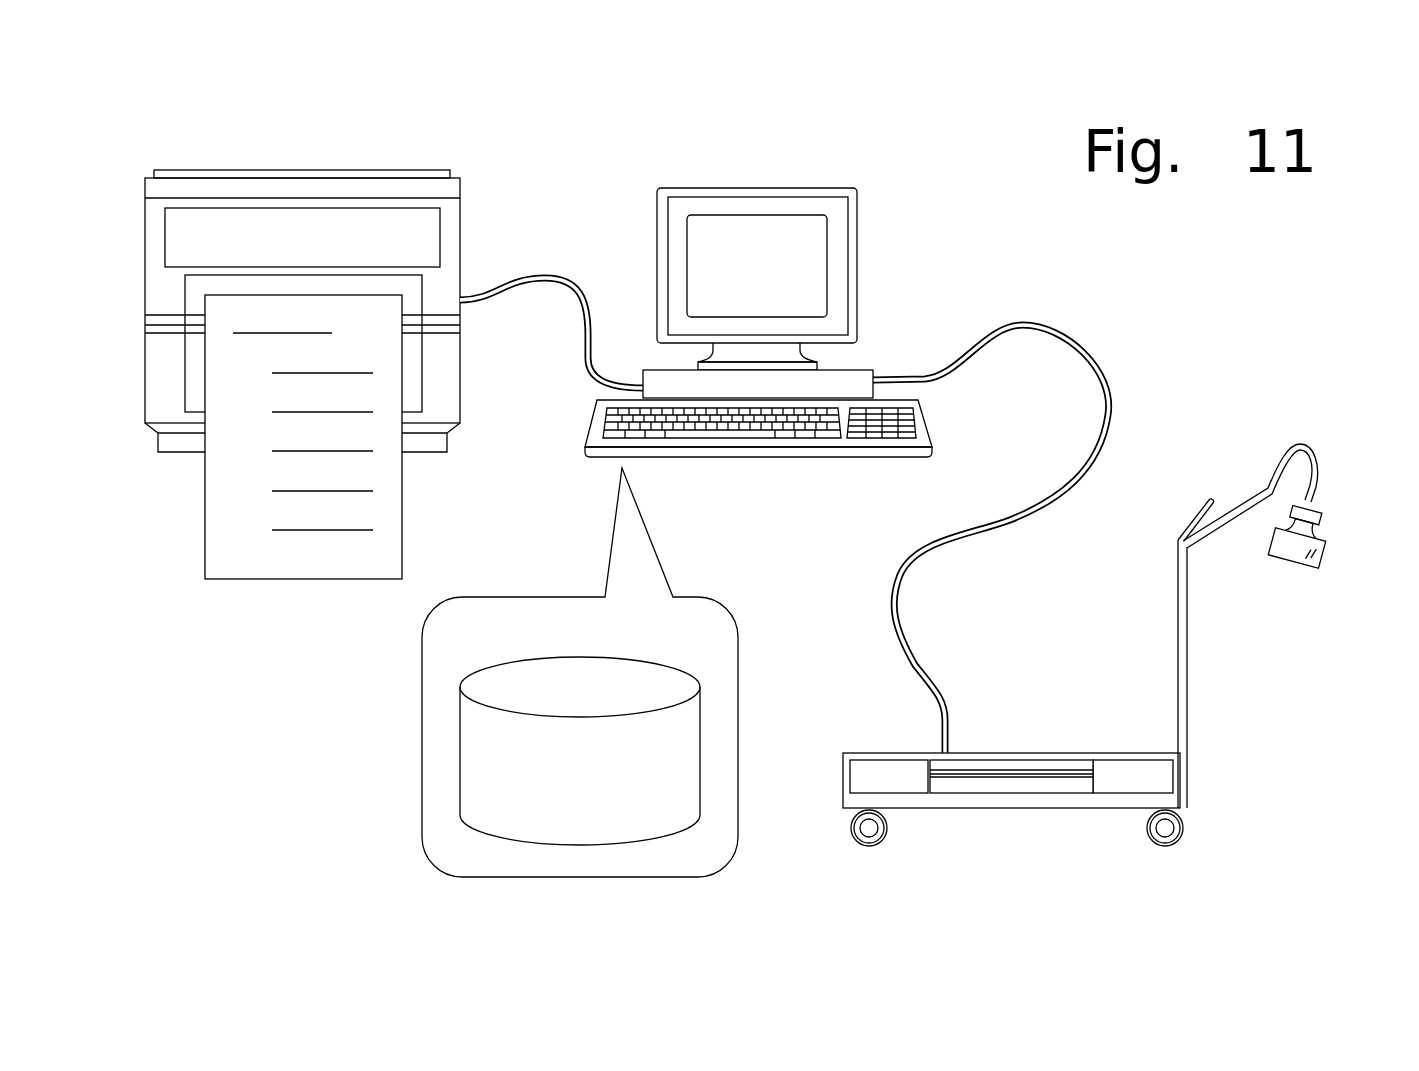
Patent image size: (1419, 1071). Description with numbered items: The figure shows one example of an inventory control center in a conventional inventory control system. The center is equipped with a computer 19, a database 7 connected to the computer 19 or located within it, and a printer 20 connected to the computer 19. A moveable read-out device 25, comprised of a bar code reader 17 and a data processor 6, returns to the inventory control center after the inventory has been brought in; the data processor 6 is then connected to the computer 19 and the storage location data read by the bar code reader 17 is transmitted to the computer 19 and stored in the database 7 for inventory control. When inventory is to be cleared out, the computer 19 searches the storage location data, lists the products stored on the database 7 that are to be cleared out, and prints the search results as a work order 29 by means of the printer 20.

The printer 20 is at (233, 170).
The work order 29 is at (280, 579).
The computer 19 is at (857, 243).
The database 7 is at (580, 672).
The moveable read-out device 25 is at (1143, 753).
The data processor 6 is at (1000, 783).
The bar code reader 17 is at (1323, 551).